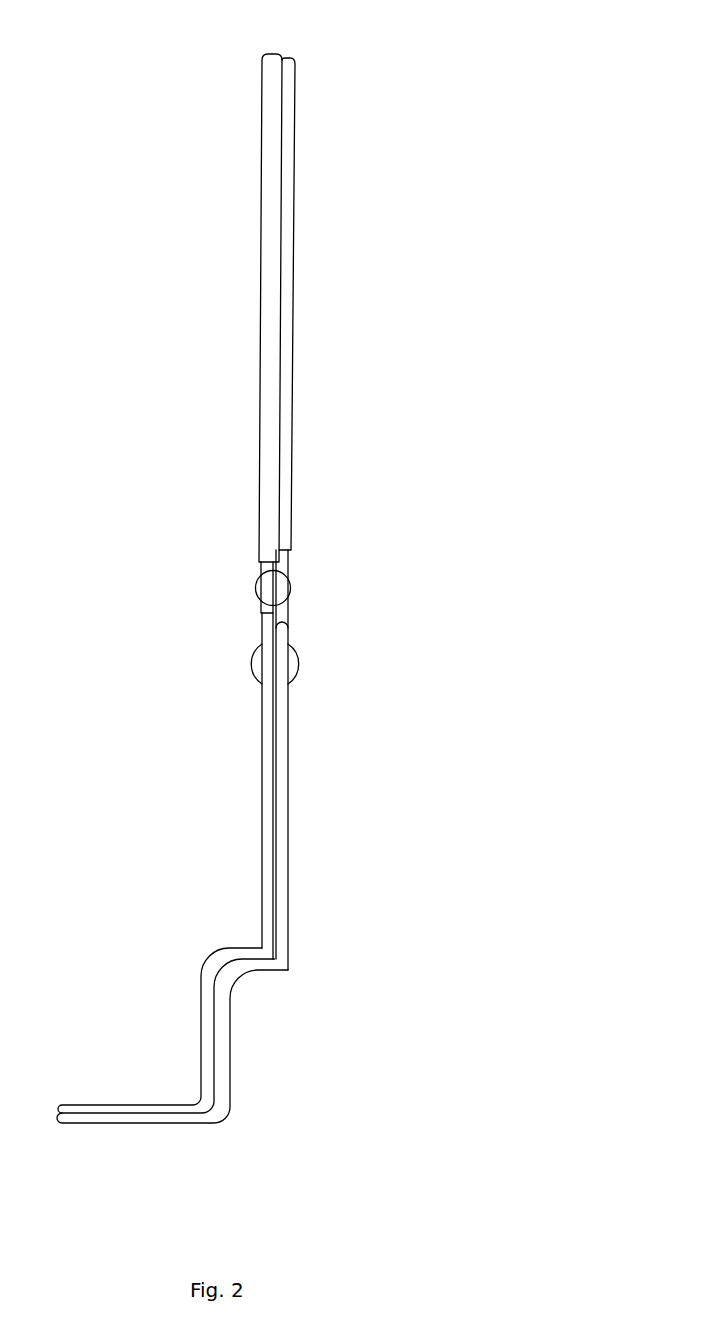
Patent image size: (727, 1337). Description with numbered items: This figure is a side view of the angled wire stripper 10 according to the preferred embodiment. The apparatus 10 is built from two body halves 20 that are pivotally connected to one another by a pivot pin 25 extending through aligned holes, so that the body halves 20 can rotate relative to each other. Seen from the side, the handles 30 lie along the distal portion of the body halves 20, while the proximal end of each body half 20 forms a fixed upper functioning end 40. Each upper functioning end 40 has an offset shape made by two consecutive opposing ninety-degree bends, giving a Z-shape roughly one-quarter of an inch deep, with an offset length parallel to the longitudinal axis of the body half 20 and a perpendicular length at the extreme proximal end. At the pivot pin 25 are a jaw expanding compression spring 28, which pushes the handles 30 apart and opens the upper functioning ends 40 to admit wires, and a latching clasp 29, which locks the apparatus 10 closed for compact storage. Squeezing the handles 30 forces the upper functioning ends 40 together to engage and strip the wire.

The angled wire stripper 10 is at (566, 160).
The body half 20 is at (258, 227).
The pivot pin 25 is at (252, 657).
The jaw expanding compression spring 28 is at (293, 587).
The latching clasp 29 is at (268, 600).
The handle 30 is at (283, 522).
The upper functioning end 40 is at (230, 1124).